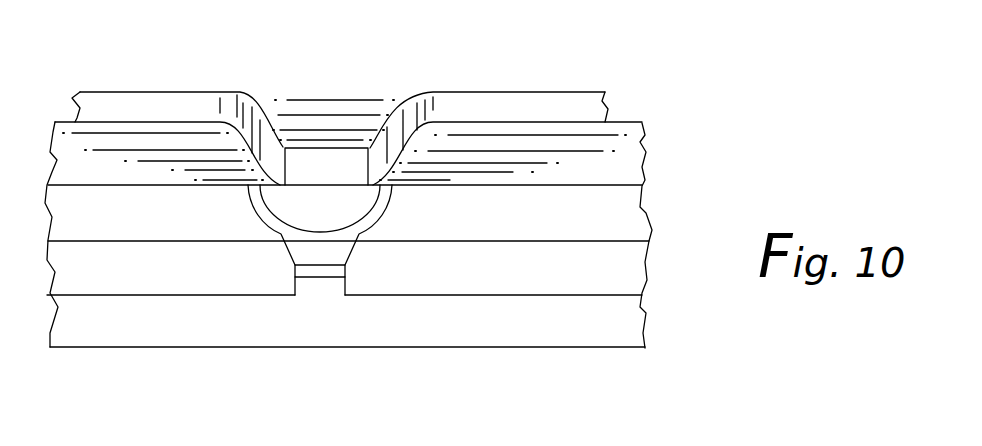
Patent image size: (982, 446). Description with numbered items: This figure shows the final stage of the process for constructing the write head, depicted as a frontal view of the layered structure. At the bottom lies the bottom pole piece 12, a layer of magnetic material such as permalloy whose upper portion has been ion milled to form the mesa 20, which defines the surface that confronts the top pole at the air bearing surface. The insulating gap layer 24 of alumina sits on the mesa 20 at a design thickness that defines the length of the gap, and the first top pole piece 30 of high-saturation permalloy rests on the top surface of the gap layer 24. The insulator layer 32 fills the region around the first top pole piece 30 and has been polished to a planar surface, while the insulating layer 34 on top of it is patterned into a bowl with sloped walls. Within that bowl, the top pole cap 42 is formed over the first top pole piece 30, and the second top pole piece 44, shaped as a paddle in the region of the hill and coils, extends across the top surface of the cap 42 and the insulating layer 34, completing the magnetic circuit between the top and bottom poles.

The bottom pole piece 12 is at (645, 314).
The mesa 20 is at (312, 277).
The insulating gap layer 24 is at (345, 283).
The first top pole piece 30 is at (290, 255).
The insulator layer 32 is at (645, 262).
The insulating layer 34 is at (645, 211).
The top pole cap 42 is at (306, 198).
The second top pole piece 44 is at (467, 93).